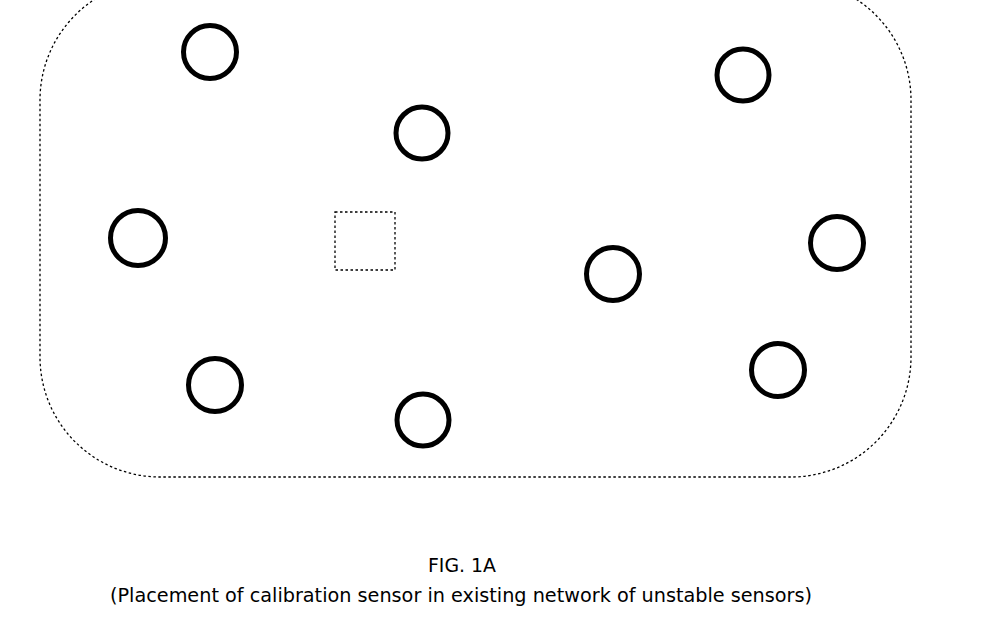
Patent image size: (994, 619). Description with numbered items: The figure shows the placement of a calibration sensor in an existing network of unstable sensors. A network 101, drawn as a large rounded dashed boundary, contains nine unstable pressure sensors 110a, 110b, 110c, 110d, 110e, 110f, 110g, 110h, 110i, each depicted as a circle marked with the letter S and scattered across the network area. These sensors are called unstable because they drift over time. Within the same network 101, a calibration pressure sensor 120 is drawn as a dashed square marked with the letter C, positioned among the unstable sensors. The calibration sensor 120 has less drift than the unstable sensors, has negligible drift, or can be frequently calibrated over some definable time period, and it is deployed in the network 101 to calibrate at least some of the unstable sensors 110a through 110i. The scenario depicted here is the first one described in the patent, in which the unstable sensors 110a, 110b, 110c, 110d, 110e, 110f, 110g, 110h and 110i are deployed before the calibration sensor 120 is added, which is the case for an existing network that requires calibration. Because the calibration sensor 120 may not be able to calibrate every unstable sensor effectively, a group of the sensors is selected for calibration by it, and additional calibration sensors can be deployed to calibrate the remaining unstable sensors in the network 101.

The network 101 is at (529, 478).
The calibration pressure sensor 120 is at (397, 220).
The unstable pressure sensor 110a is at (237, 70).
The unstable pressure sensor 110b is at (167, 246).
The unstable pressure sensor 110c is at (242, 400).
The unstable pressure sensor 110d is at (424, 104).
The unstable pressure sensor 110e is at (420, 392).
The unstable pressure sensor 110f is at (609, 303).
The unstable pressure sensor 110g is at (758, 48).
The unstable pressure sensor 110h is at (816, 222).
The unstable pressure sensor 110i is at (780, 399).